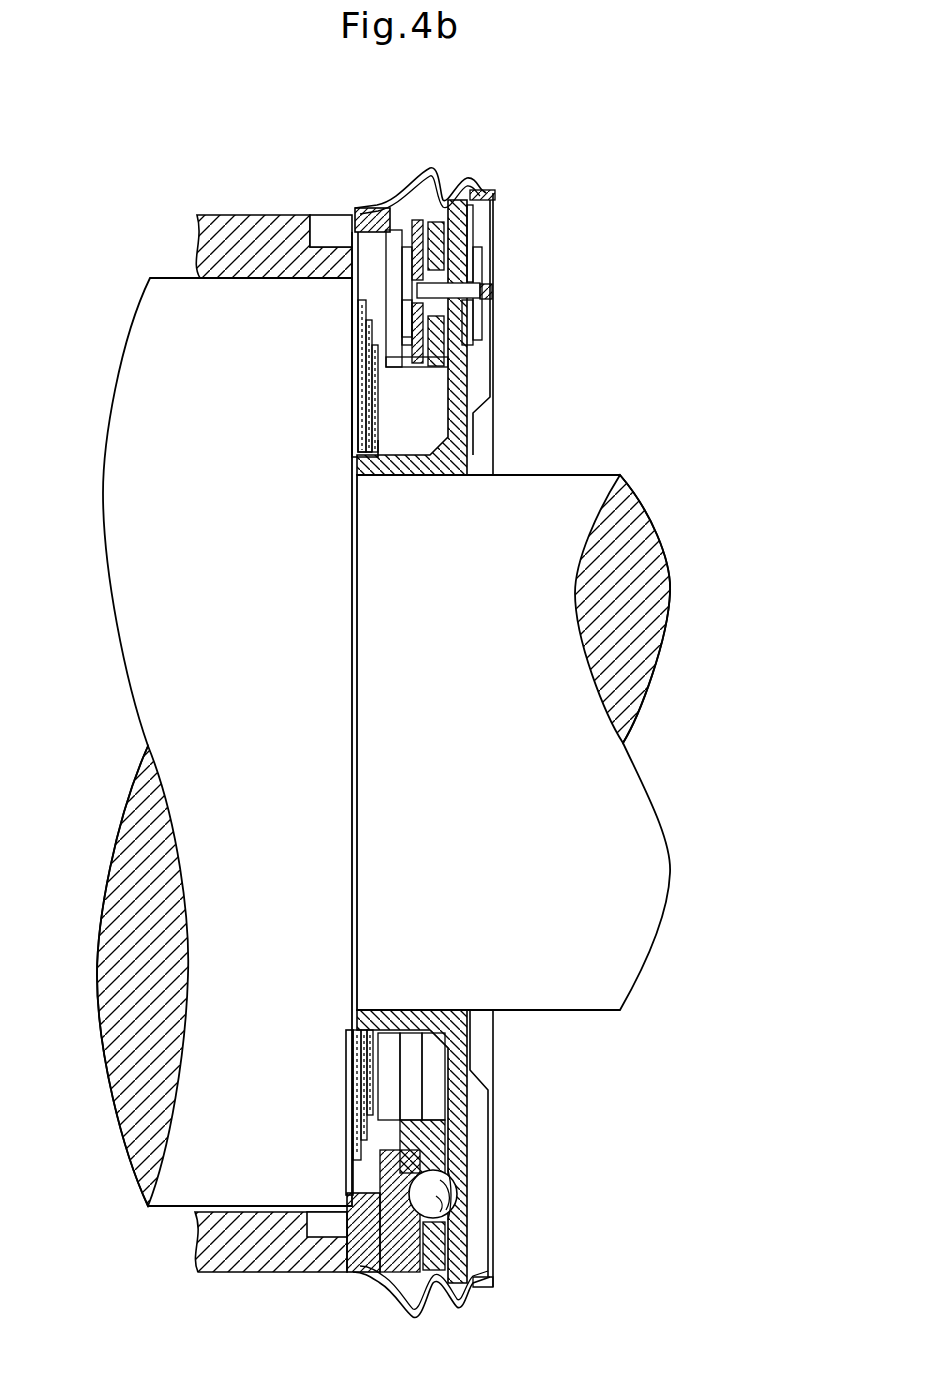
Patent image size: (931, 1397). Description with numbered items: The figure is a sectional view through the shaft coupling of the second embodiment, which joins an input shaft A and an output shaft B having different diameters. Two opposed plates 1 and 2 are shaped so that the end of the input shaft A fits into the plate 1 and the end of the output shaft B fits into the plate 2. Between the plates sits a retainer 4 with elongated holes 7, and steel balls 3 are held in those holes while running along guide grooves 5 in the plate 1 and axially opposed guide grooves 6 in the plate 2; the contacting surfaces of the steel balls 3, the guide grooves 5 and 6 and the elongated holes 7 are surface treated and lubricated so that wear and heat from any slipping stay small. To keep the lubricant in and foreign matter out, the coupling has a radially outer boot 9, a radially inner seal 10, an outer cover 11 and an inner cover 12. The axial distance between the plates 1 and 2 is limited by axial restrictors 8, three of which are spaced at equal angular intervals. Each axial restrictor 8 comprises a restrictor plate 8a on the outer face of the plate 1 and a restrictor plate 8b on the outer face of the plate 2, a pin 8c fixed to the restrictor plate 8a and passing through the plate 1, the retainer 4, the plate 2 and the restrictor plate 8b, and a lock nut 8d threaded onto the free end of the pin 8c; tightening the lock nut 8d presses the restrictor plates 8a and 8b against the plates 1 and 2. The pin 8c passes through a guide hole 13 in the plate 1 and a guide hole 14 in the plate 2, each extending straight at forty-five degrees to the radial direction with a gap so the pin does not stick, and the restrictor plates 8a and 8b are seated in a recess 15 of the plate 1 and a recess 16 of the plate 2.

The plate 1 is at (418, 222).
The plate 2 is at (450, 462).
The steel ball 3 is at (473, 1217).
The retainer 4 is at (432, 222).
The guide groove 5 is at (413, 1300).
The guide groove 6 is at (453, 1193).
The elongated hole 7 is at (447, 1178).
The axial restrictor 8 is at (517, 304).
The restrictor plate 8a is at (415, 340).
The restrictor plate 8b is at (468, 332).
The pin 8c is at (445, 293).
The lock nut 8d is at (488, 287).
The radially outer boot 9 is at (474, 185).
The radially inner seal 10 is at (364, 412).
The outer cover 11 is at (350, 1173).
The inner cover 12 is at (492, 1098).
The guide hole 13 is at (358, 205).
The guide hole 14 is at (478, 276).
The recess 15 is at (410, 268).
The recess 16 is at (470, 233).
The input shaft A is at (150, 510).
The output shaft B is at (640, 875).